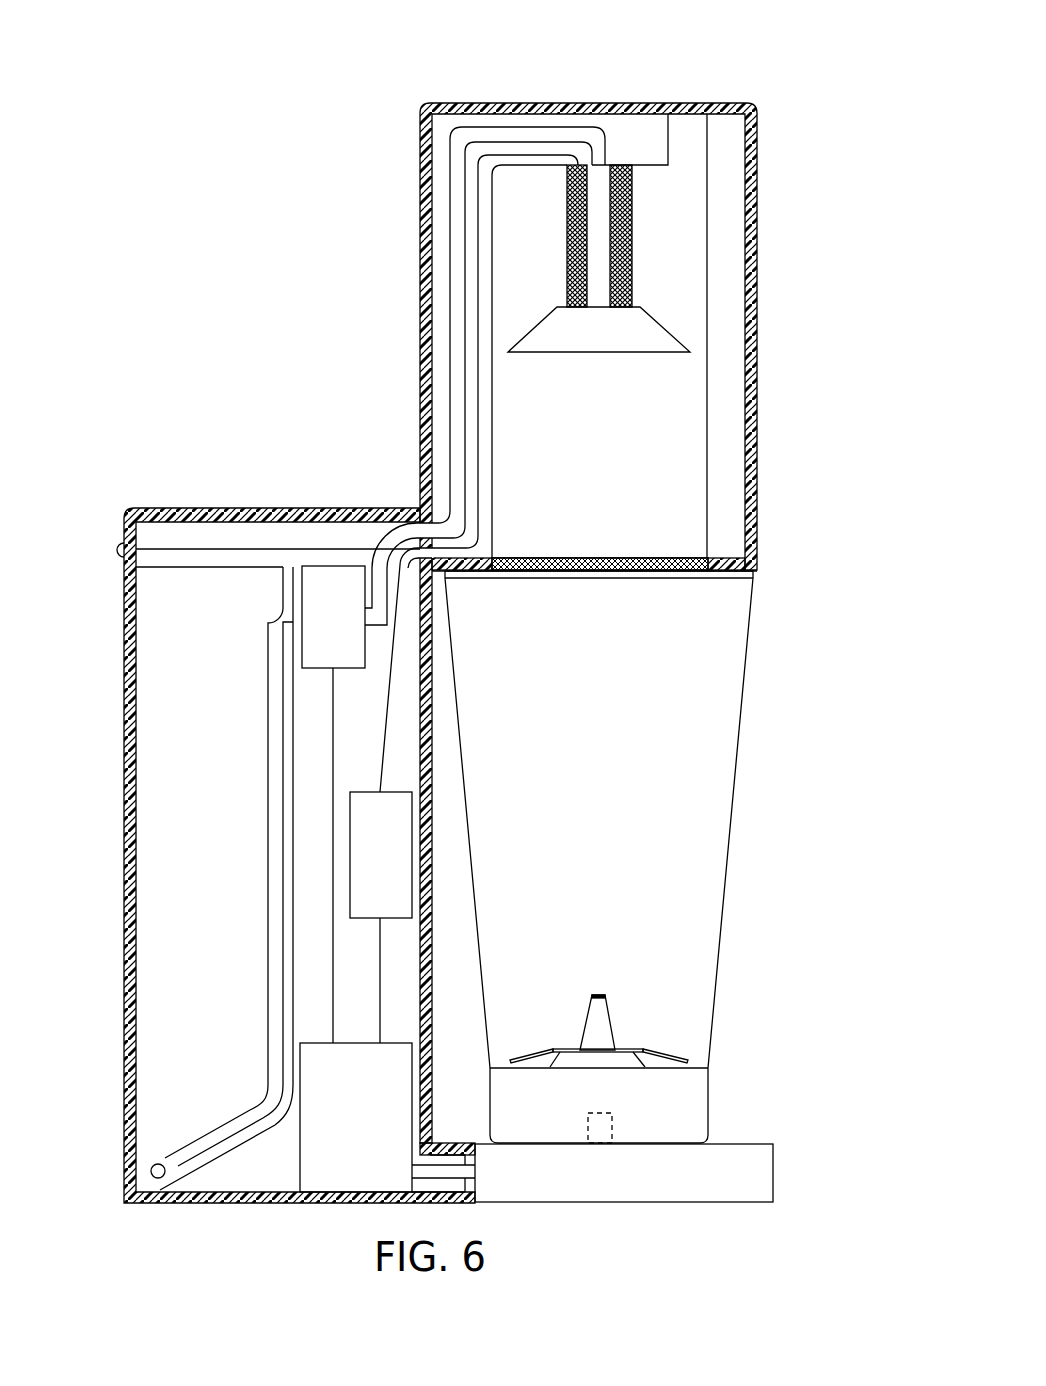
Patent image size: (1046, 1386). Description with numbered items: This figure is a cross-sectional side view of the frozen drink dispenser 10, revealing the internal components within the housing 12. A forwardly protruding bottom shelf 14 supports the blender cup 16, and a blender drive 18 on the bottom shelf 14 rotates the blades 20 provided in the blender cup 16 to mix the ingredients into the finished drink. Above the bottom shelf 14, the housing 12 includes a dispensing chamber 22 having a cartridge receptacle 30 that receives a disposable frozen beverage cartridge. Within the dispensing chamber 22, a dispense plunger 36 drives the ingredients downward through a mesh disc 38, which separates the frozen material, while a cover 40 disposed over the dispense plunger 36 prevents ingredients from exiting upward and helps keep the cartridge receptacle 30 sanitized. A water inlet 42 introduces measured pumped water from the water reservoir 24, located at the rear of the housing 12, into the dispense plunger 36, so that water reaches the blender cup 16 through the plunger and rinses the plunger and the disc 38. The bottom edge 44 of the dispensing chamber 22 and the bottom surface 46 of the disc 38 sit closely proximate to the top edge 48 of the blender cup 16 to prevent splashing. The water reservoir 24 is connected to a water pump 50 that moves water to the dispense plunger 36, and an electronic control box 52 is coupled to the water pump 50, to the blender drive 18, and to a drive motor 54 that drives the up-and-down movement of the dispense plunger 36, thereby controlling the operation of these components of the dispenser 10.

The frozen drink dispenser 10 is at (268, 180).
The housing 12 is at (133, 510).
The bottom shelf 14 is at (773, 1171).
The blender cup 16 is at (736, 748).
The blender drive 18 is at (612, 1123).
The blades 20 is at (663, 1050).
The dispensing chamber 22 is at (735, 103).
The water reservoir 24 is at (178, 1005).
The cartridge receptacle 30 is at (722, 389).
The dispense plunger 36 is at (632, 233).
The mesh disc 38 is at (650, 560).
The cover 40 is at (553, 328).
The water inlet 42 is at (620, 170).
The bottom edge 44 is at (752, 575).
The bottom surface 46 is at (675, 572).
The top edge 48 is at (463, 573).
The water pump 50 is at (330, 595).
The electronic control box 52 is at (330, 1170).
The drive motor 54 is at (373, 843).